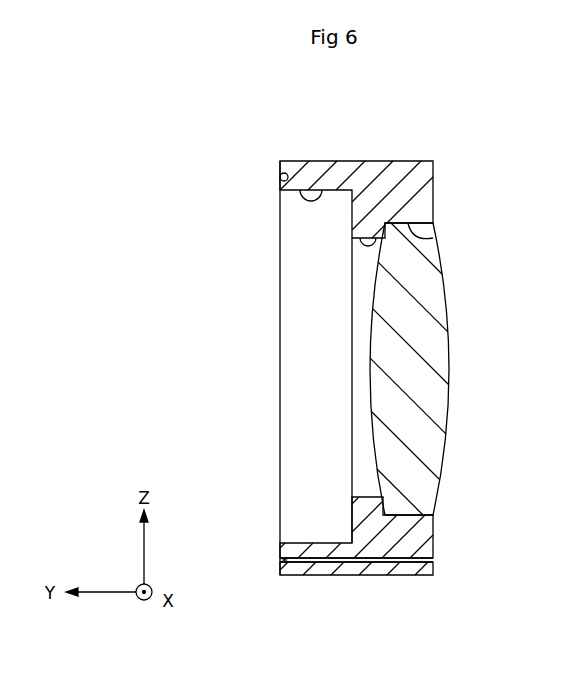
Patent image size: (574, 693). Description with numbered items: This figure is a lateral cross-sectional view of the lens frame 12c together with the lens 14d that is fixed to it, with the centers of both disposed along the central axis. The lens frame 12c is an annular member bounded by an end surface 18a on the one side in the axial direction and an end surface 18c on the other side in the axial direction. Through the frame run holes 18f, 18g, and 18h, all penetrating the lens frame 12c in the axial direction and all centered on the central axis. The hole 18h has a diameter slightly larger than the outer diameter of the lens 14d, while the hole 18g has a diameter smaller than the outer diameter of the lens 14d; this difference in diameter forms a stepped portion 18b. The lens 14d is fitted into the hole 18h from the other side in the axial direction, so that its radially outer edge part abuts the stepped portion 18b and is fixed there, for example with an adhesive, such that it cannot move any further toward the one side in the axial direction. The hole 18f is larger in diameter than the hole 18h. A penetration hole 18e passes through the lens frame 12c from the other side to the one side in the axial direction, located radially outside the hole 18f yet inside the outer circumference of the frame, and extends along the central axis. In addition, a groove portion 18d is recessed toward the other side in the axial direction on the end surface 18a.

The lens frame 12c is at (418, 173).
The lens 14d is at (447, 450).
The end surface 18a is at (280, 190).
The stepped portion 18b is at (378, 505).
The end surface 18c is at (435, 545).
The groove portion 18d is at (282, 179).
The penetration hole 18e is at (393, 562).
The hole 18f is at (316, 198).
The hole 18g is at (375, 236).
The hole 18h is at (436, 240).